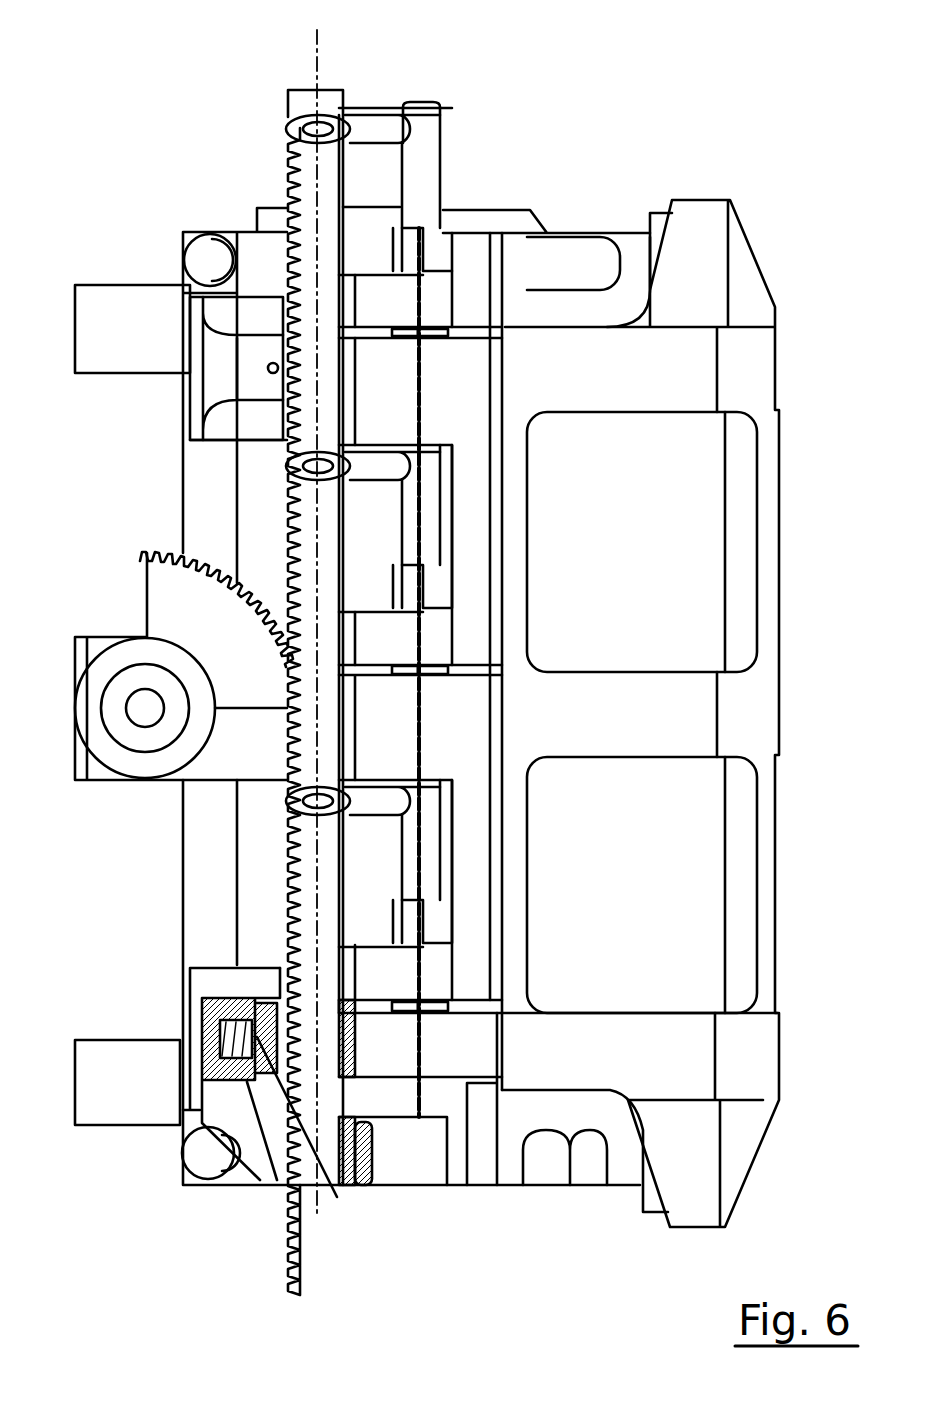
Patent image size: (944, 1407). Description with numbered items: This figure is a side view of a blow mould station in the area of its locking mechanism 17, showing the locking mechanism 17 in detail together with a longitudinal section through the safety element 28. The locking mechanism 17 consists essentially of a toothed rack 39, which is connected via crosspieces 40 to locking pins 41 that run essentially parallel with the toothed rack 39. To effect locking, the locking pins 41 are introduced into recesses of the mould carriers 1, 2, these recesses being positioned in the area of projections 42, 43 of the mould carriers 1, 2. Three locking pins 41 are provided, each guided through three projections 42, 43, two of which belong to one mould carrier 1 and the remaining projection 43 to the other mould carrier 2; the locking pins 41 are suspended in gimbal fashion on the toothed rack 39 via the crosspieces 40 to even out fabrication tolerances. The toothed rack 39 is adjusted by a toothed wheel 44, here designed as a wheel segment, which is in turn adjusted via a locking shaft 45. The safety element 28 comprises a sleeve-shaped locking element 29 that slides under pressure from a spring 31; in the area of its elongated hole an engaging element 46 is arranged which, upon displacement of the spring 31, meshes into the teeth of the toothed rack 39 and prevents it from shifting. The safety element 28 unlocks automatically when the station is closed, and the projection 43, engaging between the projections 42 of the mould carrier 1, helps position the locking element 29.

The mould carrier 1 is at (258, 255).
The mould carrier 2 is at (768, 367).
The locking mechanism 17 is at (300, 555).
The safety element 28 is at (217, 1020).
The locking element 29 is at (352, 1078).
The spring 31 is at (217, 1038).
The toothed rack 39 is at (325, 97).
The crosspiece 40 is at (380, 123).
The locking pin 41 is at (437, 167).
The projection 42 is at (475, 245).
The projection 43 is at (490, 370).
The toothed wheel 44 is at (145, 578).
The locking shaft 45 is at (143, 712).
The engaging element 46 is at (300, 1125).